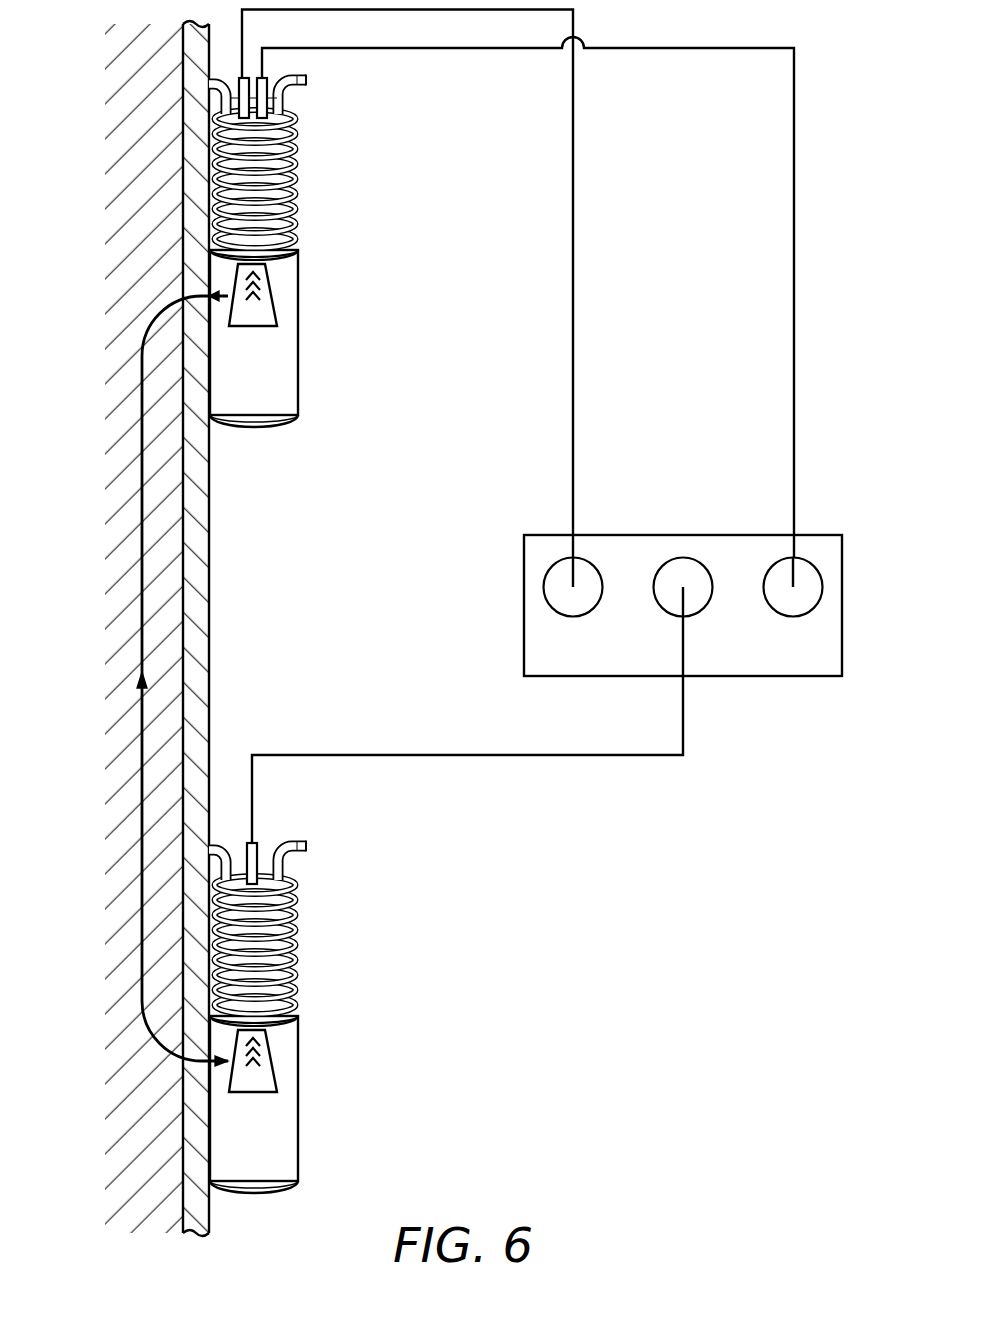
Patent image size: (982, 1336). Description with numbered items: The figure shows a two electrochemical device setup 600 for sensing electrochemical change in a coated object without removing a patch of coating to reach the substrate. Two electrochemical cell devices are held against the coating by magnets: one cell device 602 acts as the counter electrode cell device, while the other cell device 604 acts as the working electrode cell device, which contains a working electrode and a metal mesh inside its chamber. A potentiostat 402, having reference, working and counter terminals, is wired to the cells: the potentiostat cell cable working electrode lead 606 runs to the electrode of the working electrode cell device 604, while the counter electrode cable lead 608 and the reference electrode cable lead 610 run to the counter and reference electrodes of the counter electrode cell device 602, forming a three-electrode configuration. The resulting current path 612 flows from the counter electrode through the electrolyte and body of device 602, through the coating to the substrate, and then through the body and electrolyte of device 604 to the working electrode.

The two electrochemical device setup 600 is at (632, 950).
The counter electrode cell device 602 is at (298, 345).
The working electrode cell device 604 is at (298, 1111).
The potentiostat cell cable working electrode lead 606 is at (648, 757).
The potentiostat counter electrode cable lead 608 is at (794, 394).
The reference electrode cable lead 610 is at (573, 394).
The current path 612 is at (142, 571).
The potentiostat 402 is at (808, 676).